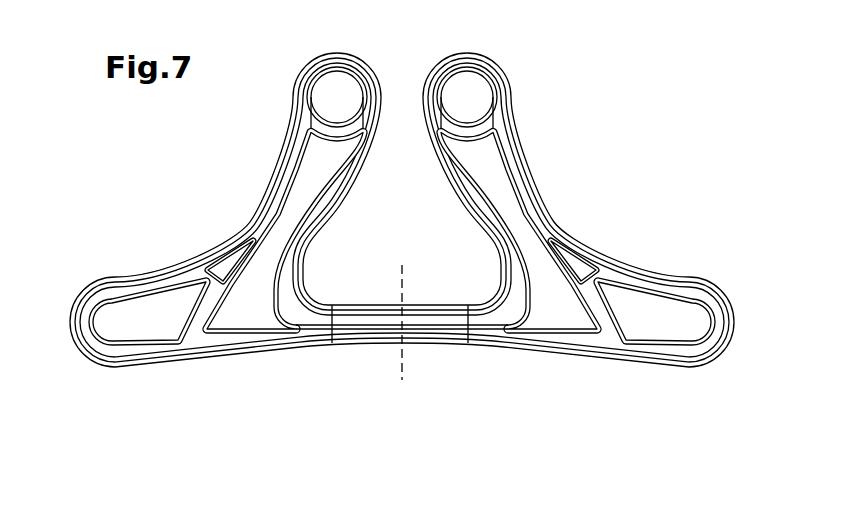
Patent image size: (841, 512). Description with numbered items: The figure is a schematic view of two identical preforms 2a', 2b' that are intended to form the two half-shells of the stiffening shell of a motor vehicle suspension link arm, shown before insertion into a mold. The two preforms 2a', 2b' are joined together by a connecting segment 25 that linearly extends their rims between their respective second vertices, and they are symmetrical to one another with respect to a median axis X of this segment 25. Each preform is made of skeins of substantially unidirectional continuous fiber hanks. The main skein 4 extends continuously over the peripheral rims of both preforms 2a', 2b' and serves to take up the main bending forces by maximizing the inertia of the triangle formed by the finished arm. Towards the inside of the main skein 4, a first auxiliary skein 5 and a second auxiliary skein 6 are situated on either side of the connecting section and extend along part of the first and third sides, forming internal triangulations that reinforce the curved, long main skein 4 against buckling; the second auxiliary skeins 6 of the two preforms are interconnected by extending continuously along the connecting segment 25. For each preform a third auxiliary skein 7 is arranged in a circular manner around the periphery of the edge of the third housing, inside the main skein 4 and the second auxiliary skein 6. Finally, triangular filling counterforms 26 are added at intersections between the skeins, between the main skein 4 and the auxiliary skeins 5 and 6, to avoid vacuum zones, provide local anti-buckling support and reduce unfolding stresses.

The preform 2a' is at (224, 245).
The preform 2b' is at (568, 252).
The main skein 4 is at (386, 226).
The first auxiliary skein 5 is at (112, 301).
The second auxiliary skein 6 is at (292, 168).
The third auxiliary skein 7 is at (324, 68).
The connecting segment 25 is at (378, 344).
The filling counterform 26 is at (218, 268).
The median axis X is at (398, 290).